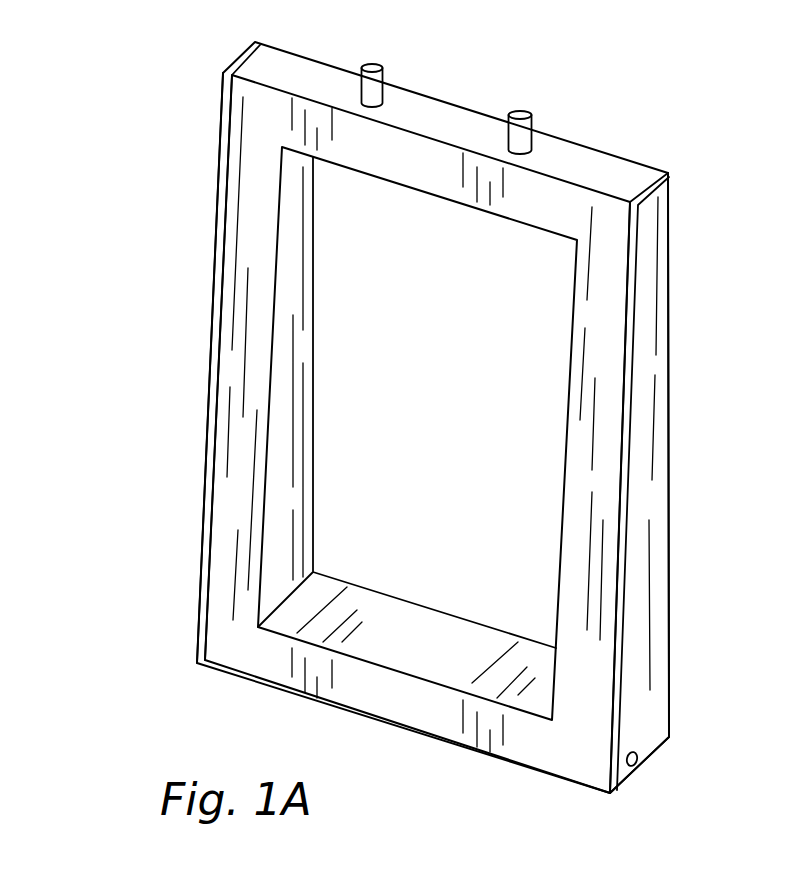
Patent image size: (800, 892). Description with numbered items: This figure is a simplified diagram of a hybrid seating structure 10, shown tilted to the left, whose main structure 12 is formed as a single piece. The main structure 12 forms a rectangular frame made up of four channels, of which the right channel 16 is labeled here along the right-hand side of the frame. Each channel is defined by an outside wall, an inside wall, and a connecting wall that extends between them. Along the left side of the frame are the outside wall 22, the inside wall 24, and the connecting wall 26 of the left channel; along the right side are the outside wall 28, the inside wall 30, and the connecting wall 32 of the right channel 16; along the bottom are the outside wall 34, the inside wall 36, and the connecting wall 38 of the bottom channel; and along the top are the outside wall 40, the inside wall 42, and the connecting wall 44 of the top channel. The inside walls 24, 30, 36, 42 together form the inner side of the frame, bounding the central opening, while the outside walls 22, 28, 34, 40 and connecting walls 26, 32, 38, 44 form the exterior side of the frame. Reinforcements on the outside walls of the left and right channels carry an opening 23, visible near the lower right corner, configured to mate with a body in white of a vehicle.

The hybrid seating structure 10 is at (660, 75).
The main structure 12 is at (178, 470).
The right channel 16 is at (625, 447).
The outside wall 22 is at (218, 236).
The opening 23 is at (638, 762).
The inside wall 24 is at (305, 348).
The connecting wall 26 is at (237, 418).
The outside wall 28 is at (662, 324).
The inside wall 30 is at (571, 318).
The connecting wall 32 is at (597, 508).
The outside wall 34 is at (483, 750).
The inside wall 36 is at (401, 634).
The connecting wall 38 is at (372, 693).
The outside wall 40 is at (443, 121).
The inside wall 42 is at (485, 212).
The connecting wall 44 is at (407, 165).